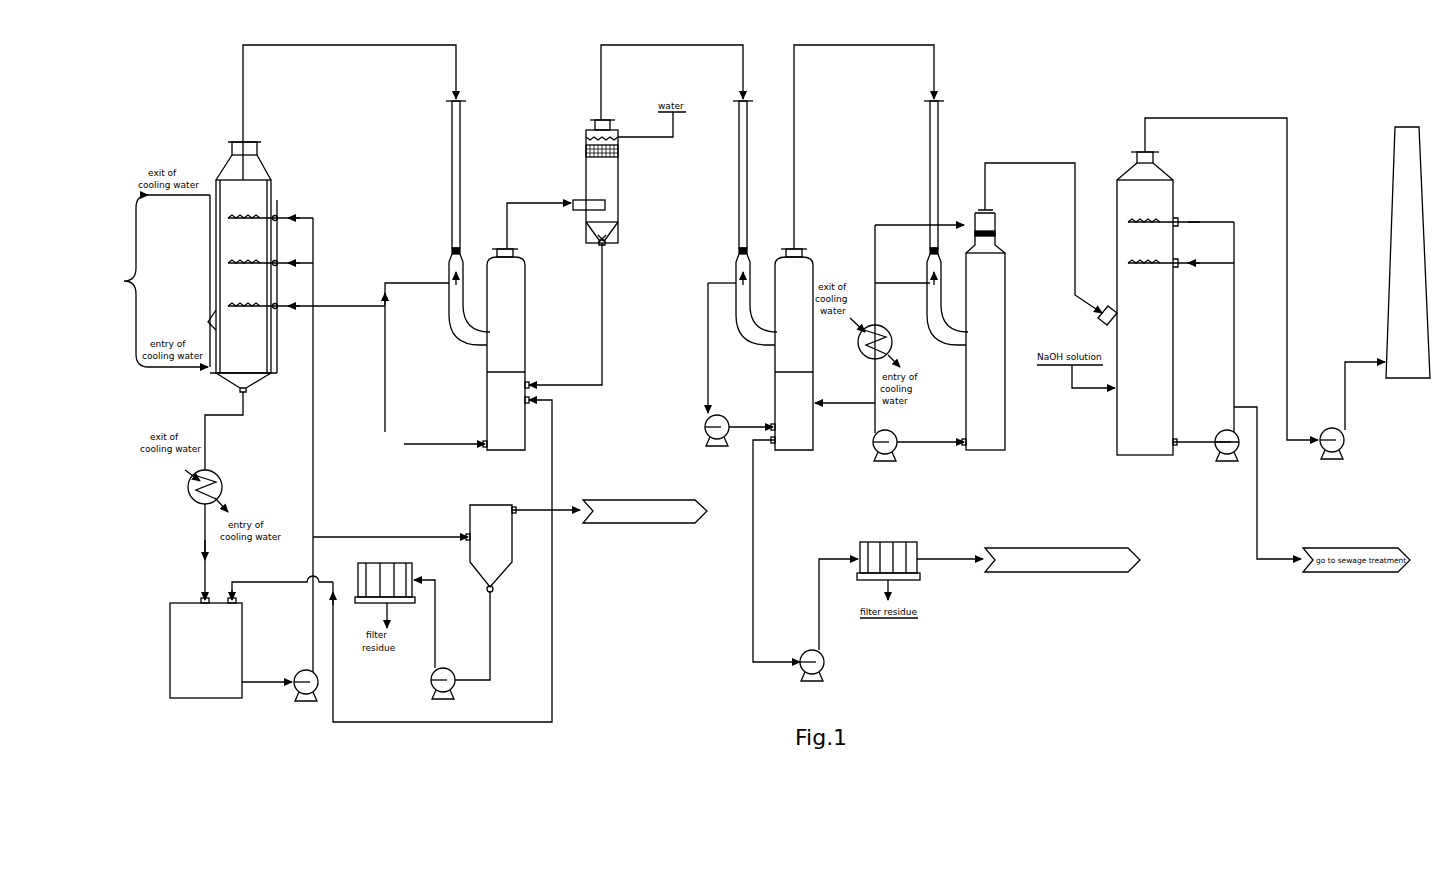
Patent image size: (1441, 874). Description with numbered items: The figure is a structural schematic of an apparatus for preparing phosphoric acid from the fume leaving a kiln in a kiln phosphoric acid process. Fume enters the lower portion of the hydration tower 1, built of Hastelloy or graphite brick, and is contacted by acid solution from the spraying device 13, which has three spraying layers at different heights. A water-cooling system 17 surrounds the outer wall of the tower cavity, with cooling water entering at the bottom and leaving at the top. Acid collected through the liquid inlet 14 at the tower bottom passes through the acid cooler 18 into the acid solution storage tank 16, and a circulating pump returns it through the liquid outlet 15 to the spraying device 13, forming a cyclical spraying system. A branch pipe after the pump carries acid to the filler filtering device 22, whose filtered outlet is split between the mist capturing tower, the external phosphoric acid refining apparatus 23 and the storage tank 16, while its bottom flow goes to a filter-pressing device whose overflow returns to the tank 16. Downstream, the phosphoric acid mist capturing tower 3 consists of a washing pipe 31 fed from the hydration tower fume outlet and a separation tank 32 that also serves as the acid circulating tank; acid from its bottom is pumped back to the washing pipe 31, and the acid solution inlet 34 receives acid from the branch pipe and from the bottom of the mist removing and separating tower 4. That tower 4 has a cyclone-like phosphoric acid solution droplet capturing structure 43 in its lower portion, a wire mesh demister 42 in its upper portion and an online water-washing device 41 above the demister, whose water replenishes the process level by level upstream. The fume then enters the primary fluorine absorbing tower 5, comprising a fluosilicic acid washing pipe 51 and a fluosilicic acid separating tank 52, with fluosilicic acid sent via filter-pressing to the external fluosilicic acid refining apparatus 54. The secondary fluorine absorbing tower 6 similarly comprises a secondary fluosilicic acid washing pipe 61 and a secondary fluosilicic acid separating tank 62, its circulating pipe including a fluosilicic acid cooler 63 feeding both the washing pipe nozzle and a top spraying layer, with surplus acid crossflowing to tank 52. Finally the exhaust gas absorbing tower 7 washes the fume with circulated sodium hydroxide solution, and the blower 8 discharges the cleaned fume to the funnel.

The hydration tower 1 is at (228, 192).
The phosphoric acid mist capturing tower 3 is at (455, 265).
The mist removing and separating tower 4 is at (593, 175).
The primary fluorine absorbing tower 5 is at (738, 258).
The secondary fluorine absorbing tower 6 is at (933, 250).
The exhaust gas absorbing tower 7 is at (1115, 232).
The blower 8 is at (1330, 428).
The spraying device 13 is at (232, 262).
The liquid inlet 14 is at (240, 390).
The liquid outlet 15 is at (275, 265).
The acid solution storage tank 16 is at (185, 640).
The water-cooling system 17 is at (119, 281).
The acid cooler 18 is at (195, 497).
The filler filtering device 22 is at (470, 512).
The external phosphoric acid refining apparatus 23 is at (630, 502).
The washing pipe 31 is at (452, 175).
The separation tank 32 is at (503, 397).
The acid solution inlet 34 is at (530, 383).
The online water-washing device 41 is at (668, 136).
The wire mesh demister 42 is at (603, 153).
The conical bottom 43 is at (605, 243).
The fluosilicic acid washing pipe 51 is at (738, 205).
The fluosilicic acid separating tank 52 is at (783, 423).
The external fluosilicic acid refining apparatus 54 is at (990, 552).
The secondary fluosilicic acid washing pipe 61 is at (930, 210).
The secondary fluosilicic acid separating tank 62 is at (985, 420).
The fluosilicic acid cooler 63 is at (857, 328).